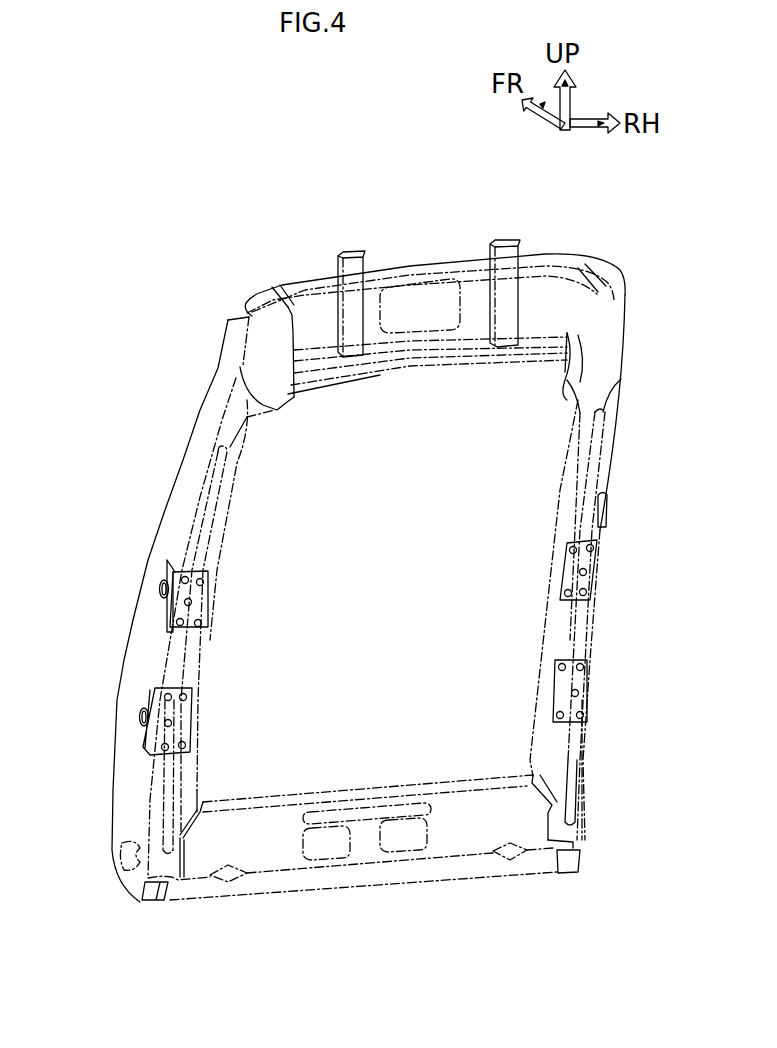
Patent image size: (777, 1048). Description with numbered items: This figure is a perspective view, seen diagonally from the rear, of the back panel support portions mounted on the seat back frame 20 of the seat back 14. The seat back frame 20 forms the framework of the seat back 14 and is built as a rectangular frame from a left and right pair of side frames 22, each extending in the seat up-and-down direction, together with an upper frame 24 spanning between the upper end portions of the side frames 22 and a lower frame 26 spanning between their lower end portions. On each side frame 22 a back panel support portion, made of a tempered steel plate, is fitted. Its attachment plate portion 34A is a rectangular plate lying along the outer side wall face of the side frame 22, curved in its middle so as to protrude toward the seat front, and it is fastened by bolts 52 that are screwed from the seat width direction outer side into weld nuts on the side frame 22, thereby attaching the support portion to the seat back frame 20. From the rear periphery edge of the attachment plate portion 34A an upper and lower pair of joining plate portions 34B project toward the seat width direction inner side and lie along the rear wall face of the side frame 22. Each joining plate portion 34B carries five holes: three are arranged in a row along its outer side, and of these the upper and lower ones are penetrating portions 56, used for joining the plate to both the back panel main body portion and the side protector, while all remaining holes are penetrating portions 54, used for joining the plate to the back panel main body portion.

The seat back 14 is at (434, 214).
The seat back frame 20 is at (566, 238).
The side frame 22 is at (225, 430).
The upper frame 24 is at (600, 257).
The lower frame 26 is at (455, 873).
The attachment plate portion 34A is at (167, 572).
The joining plate portion 34B is at (200, 600).
The bolt 52 is at (157, 589).
The penetrating portion 54 is at (187, 602).
The penetrating portion 56 is at (190, 573).